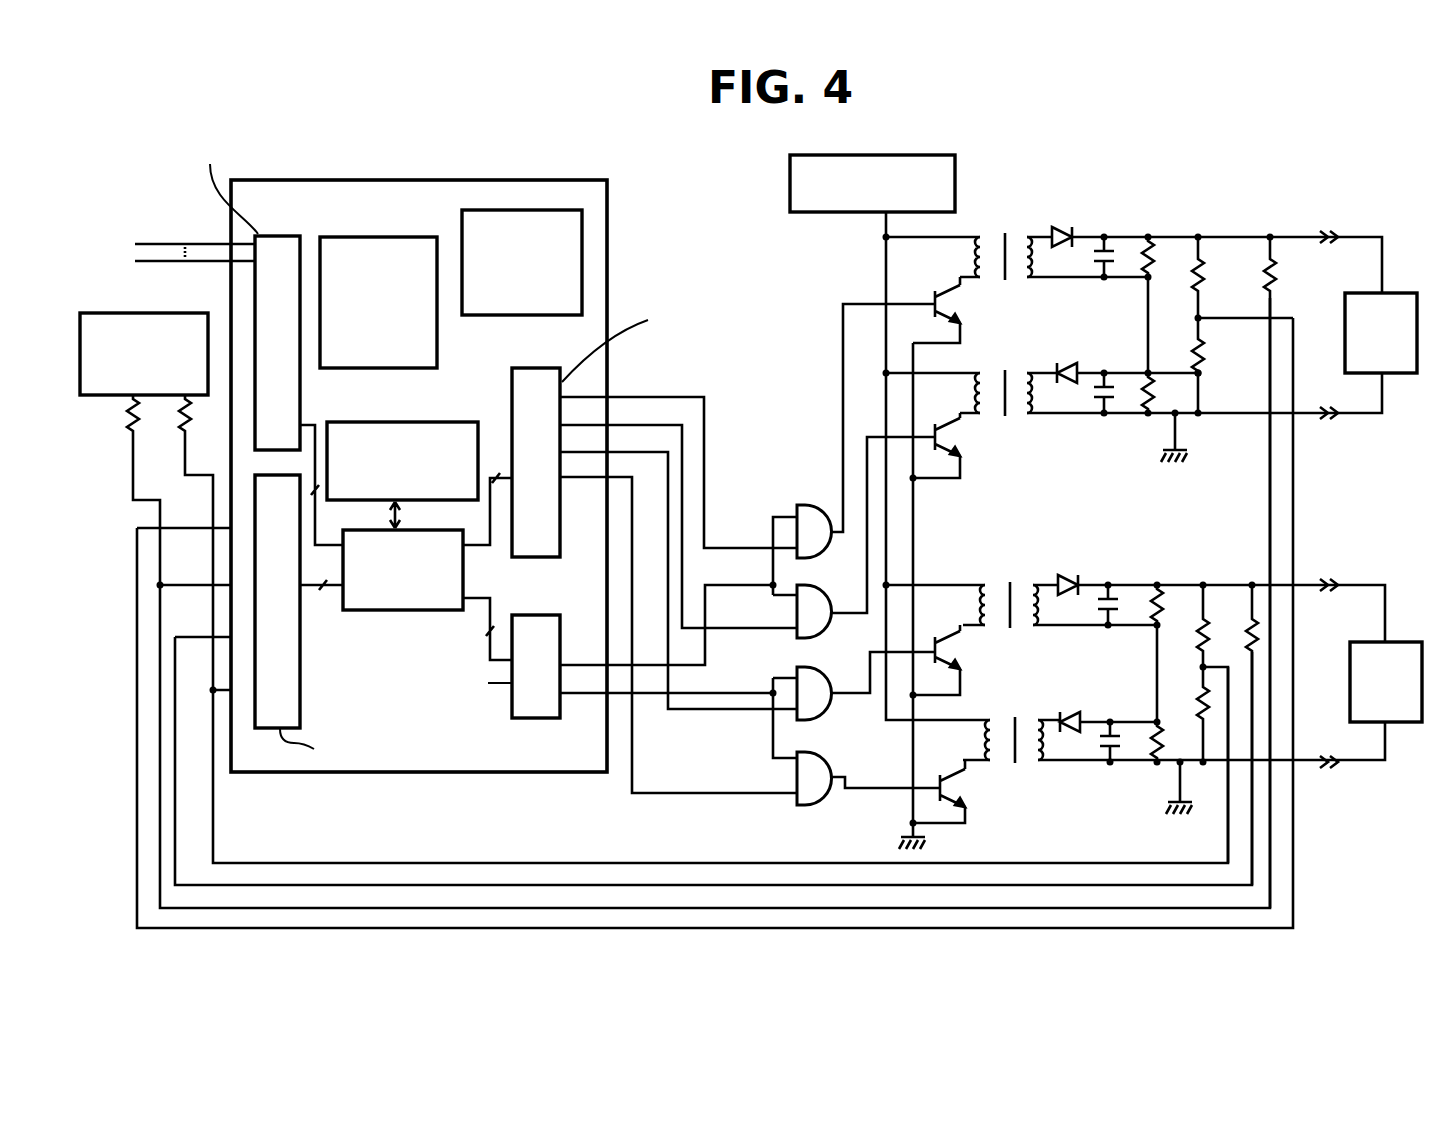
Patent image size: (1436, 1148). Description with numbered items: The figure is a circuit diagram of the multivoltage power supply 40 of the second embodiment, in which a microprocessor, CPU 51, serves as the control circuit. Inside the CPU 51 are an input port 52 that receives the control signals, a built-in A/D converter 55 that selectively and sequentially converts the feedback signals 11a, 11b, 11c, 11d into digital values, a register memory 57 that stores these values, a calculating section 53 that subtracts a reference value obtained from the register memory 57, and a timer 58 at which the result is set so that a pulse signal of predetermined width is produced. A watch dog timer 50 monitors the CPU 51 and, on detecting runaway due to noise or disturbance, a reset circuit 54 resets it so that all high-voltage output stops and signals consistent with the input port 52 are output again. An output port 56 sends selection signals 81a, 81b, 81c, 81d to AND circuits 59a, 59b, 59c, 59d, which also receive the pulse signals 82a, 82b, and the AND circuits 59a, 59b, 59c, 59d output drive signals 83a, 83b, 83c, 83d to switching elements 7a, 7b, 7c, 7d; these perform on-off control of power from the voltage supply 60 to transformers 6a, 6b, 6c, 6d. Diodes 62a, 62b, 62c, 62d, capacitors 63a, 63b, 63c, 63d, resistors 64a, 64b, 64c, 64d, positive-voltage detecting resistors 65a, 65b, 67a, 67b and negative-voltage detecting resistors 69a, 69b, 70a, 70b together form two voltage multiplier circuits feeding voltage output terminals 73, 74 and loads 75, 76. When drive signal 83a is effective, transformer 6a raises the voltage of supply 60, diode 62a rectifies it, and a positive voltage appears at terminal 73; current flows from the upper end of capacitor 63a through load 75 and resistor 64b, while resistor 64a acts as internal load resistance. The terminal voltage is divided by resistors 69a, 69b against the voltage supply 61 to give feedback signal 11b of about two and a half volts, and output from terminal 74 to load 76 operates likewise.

The multivoltage power supply 40 is at (1148, 130).
The CPU 51 is at (372, 180).
The input port 52 is at (290, 236).
The A/D converter 55 is at (302, 698).
The watch dog timer 50 is at (402, 236).
The reset circuit 54 is at (533, 210).
The calculating section 53 is at (452, 420).
The register memory 57 is at (424, 612).
The output port 56 is at (536, 366).
The timer 58 is at (548, 614).
The voltage supply 61 is at (152, 312).
The negative-voltage detecting resistor 69b is at (128, 420).
The negative-voltage detecting resistor 70b is at (180, 441).
The feedback signal 11a is at (200, 528).
The feedback signal 11b is at (204, 586).
The feedback signal 11c is at (208, 638).
The feedback signal 11d is at (218, 690).
The selection signal 81a is at (678, 396).
The selection signal 81b is at (614, 426).
The selection signal 81c is at (608, 453).
The selection signal 81d is at (610, 479).
The pulse signal 82a is at (706, 652).
The pulse signal 82b is at (690, 700).
The AND circuit 59a is at (825, 503).
The AND circuit 59b is at (856, 586).
The AND circuit 59c is at (855, 667).
The AND circuit 59d is at (812, 770).
The drive signal 83a is at (840, 365).
The drive signal 83b is at (869, 434).
The drive signal 83c is at (868, 651).
The drive signal 83d is at (858, 790).
The voltage supply 60 is at (958, 172).
The transformer 6a is at (992, 238).
The transformer 6b is at (1002, 378).
The transformer 6c is at (997, 589).
The transformer 6d is at (1007, 724).
The switching element 7a is at (964, 310).
The switching element 7b is at (965, 445).
The switching element 7c is at (964, 660).
The switching element 7d is at (967, 791).
The diode 62a is at (1064, 230).
The diode 62b is at (1068, 362).
The diode 62c is at (1066, 574).
The diode 62d is at (1070, 716).
The capacitor 63a is at (1120, 250).
The capacitor 63b is at (1114, 382).
The capacitor 63c is at (1112, 598).
The capacitor 63d is at (1120, 714).
The resistor 64a is at (1156, 250).
The resistor 64b is at (1154, 402).
The resistor 64c is at (1164, 606).
The resistor 64d is at (1154, 762).
The positive-voltage detecting resistor 65a is at (1204, 296).
The positive-voltage detecting resistor 65b is at (1206, 371).
The negative-voltage detecting resistor 69a is at (1277, 296).
The positive-voltage detecting resistor 67a is at (1214, 638).
The positive-voltage detecting resistor 67b is at (1192, 704).
The negative-voltage detecting resistor 70a is at (1251, 598).
The voltage output terminal 73 is at (1314, 238).
The voltage output terminal 74 is at (1308, 588).
The load 75 is at (1358, 292).
The load 76 is at (1362, 642).